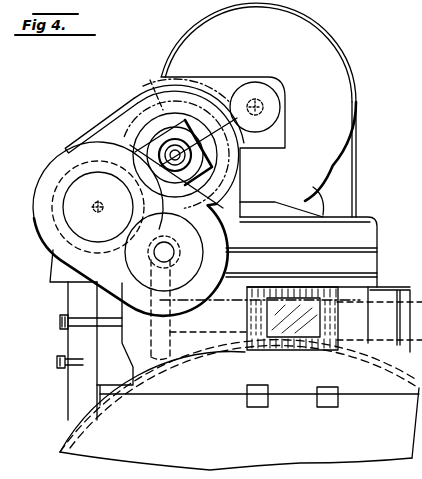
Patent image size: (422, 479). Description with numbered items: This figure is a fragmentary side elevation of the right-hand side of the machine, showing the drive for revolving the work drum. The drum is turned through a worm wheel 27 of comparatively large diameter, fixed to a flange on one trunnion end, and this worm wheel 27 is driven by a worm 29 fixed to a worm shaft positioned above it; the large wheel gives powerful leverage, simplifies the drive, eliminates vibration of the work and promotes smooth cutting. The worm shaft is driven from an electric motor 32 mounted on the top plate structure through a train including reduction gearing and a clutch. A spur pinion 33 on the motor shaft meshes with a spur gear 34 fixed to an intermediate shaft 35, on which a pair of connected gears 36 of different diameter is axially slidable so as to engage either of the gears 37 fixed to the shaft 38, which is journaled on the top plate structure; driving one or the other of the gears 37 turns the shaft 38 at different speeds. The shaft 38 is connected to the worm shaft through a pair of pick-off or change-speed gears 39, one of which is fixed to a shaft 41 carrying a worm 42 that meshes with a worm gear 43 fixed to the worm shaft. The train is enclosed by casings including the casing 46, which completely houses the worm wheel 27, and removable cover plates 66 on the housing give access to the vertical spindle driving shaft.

The worm wheel 27 is at (115, 417).
The worm 29 is at (313, 295).
The electric motor 32 is at (315, 47).
The spur pinion 33 is at (267, 87).
The spur gear 34 is at (200, 90).
The intermediate shaft 35 is at (168, 152).
The connected gears 36 is at (160, 100).
The gears 37 is at (65, 140).
The shaft 38 is at (98, 207).
The pick-off gears 39 is at (100, 279).
The shaft 41 is at (164, 252).
The worm 42 is at (150, 255).
The worm gear 43 is at (176, 366).
The casing 46 is at (90, 418).
The cover plates 66 is at (73, 377).